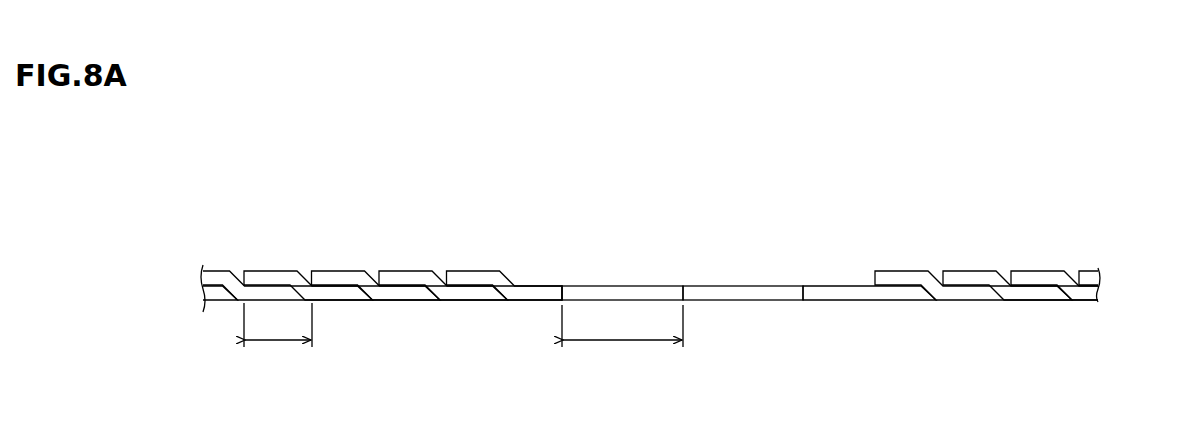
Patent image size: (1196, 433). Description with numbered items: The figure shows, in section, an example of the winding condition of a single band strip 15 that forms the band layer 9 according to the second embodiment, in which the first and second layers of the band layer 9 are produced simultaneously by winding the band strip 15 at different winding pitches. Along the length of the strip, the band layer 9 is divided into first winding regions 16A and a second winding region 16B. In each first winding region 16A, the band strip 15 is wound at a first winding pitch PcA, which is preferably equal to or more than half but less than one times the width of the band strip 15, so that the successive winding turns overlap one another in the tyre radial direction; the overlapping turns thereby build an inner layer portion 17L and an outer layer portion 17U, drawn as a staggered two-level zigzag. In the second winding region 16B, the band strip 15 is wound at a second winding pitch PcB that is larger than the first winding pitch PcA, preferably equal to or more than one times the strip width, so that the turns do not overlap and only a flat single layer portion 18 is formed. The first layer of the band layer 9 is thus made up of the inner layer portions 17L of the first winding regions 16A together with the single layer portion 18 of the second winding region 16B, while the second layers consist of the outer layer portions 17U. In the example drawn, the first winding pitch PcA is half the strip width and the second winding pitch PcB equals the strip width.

The band layer 9 is at (1100, 243).
The band strip 15 is at (217, 277).
The first winding region 16A is at (507, 195).
The second winding region 16B is at (868, 195).
The outer layer portion 17U is at (343, 279).
The inner layer portion 17L is at (343, 297).
The single layer portion 18 is at (618, 293).
The first winding pitch PcA is at (278, 337).
The second winding pitch PcB is at (622, 338).